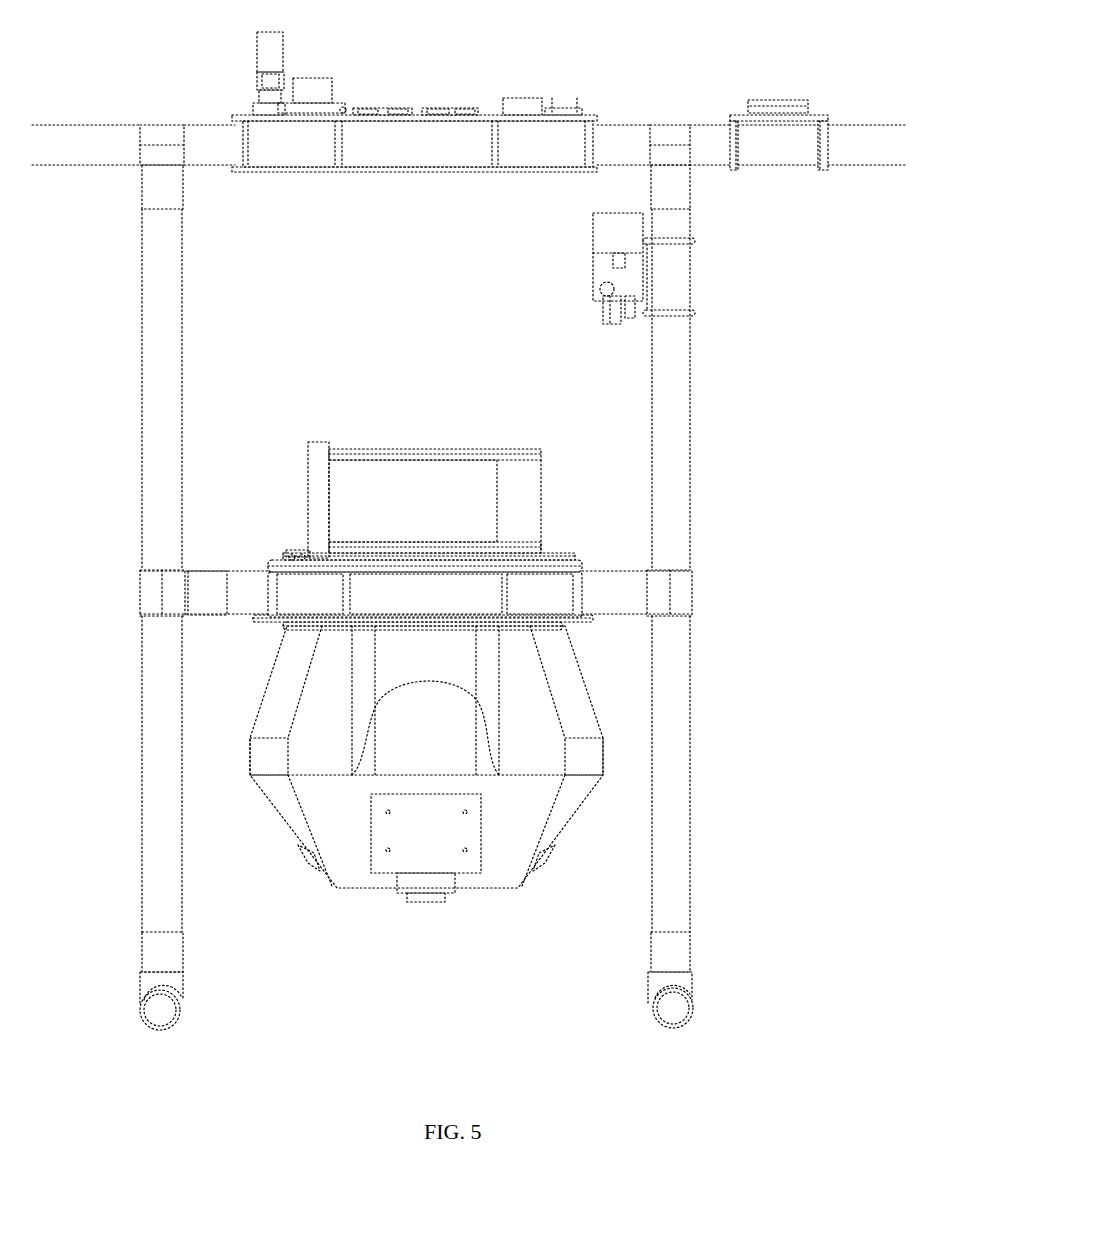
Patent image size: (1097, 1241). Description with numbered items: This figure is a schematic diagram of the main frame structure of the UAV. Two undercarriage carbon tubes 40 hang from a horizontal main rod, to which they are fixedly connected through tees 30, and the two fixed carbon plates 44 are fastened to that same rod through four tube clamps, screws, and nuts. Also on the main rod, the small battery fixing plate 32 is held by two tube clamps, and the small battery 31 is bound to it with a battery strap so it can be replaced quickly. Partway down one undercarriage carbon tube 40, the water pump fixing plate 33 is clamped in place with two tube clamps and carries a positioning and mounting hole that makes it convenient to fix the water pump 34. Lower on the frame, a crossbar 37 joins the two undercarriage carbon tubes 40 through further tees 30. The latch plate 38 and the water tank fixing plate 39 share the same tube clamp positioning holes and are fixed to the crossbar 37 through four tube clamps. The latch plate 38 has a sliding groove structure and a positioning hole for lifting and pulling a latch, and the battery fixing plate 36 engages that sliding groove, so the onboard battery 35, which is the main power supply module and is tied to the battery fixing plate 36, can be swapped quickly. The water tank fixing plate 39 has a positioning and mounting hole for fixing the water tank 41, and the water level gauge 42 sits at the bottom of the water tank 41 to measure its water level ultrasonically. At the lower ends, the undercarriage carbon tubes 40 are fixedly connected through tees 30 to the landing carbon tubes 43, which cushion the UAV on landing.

The tee 30 is at (140, 120).
The small battery 31 is at (795, 99).
The small battery fixing plate 32 is at (730, 122).
The water pump fixing plate 33 is at (643, 270).
The water pump 34 is at (598, 293).
The onboard battery 35 is at (347, 482).
The battery fixing plate 36 is at (296, 556).
The crossbar 37 is at (593, 603).
The latch plate 38 is at (583, 568).
The water tank fixing plate 39 is at (593, 617).
The undercarriage carbon tube 40 is at (668, 783).
The water tank 41 is at (522, 828).
The water level gauge 42 is at (430, 896).
The landing carbon tube 43 is at (177, 999).
The fixed carbon plate 44 is at (235, 112).